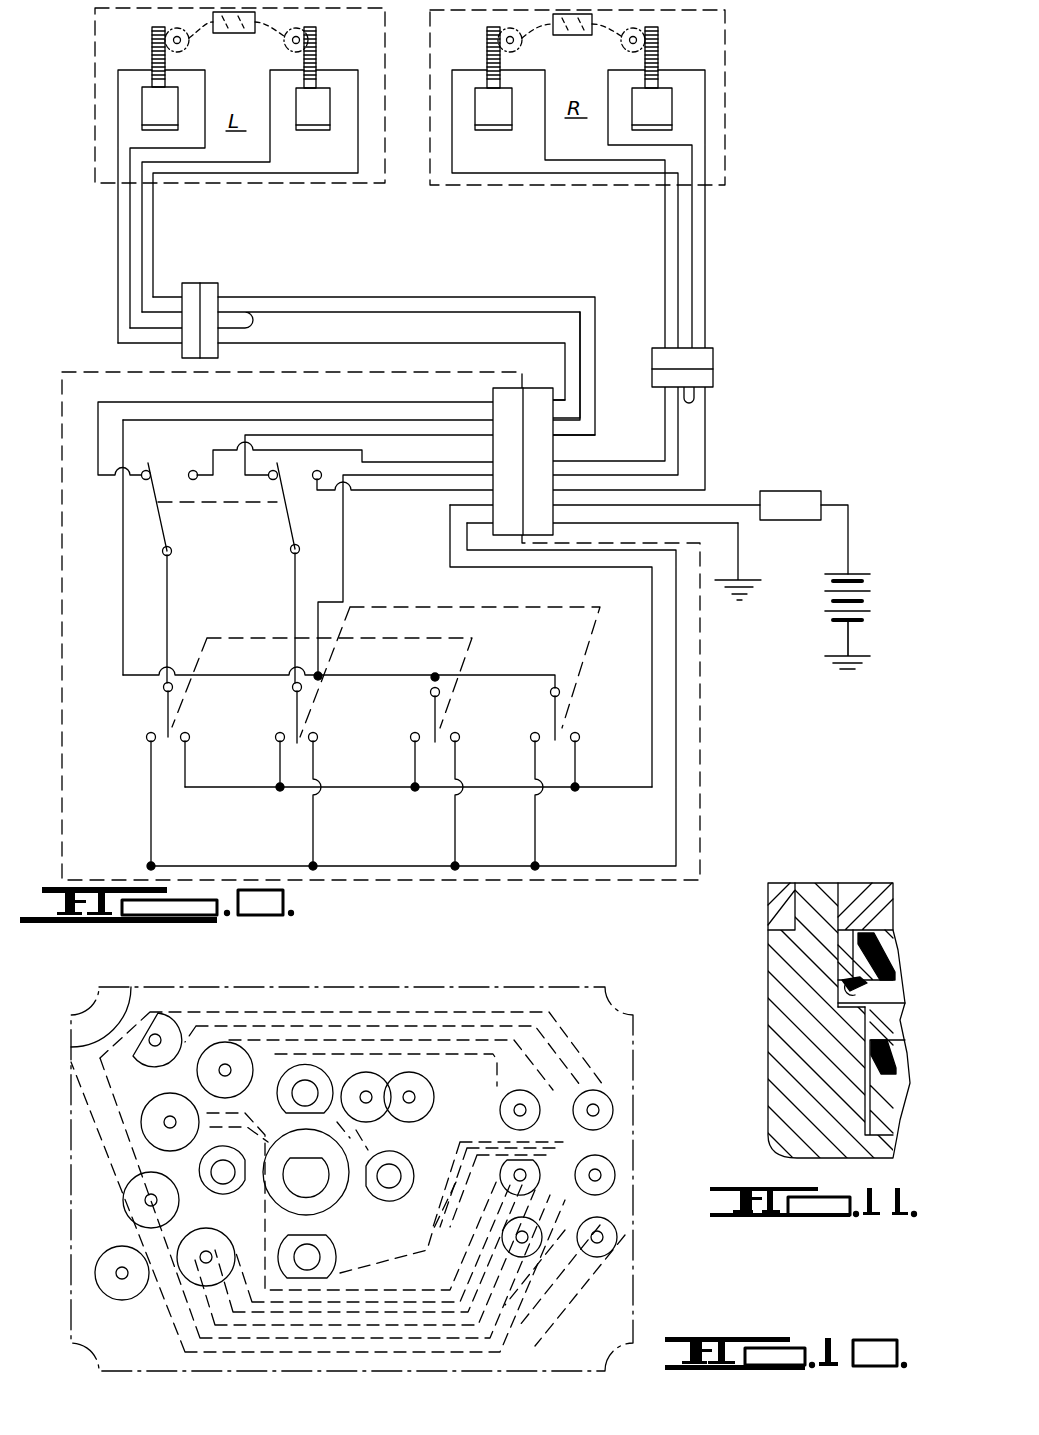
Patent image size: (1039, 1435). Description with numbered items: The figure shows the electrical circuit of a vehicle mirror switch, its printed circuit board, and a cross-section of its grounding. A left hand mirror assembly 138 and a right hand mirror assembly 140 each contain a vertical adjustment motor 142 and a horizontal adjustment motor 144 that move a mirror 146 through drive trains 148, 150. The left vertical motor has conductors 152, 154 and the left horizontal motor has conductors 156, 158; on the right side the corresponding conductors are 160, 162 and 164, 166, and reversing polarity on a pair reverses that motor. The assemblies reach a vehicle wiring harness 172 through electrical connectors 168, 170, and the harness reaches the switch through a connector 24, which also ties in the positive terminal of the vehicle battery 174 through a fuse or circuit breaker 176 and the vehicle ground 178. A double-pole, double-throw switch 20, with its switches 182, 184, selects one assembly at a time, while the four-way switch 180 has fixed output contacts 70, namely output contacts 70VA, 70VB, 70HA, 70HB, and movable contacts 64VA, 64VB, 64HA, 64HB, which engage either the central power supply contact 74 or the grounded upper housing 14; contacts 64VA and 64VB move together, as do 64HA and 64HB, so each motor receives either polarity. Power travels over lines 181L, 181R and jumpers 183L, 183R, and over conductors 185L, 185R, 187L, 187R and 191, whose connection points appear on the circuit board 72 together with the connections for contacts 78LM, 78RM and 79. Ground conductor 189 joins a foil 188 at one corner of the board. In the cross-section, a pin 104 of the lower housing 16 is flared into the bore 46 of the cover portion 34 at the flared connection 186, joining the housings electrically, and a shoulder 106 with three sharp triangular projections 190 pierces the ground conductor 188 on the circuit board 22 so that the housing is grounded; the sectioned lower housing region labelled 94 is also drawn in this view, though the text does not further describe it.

In FIG. 9, the left hand mirror assembly 138 is at (95, 133).
In FIG. 9, the right hand mirror assembly 140 is at (725, 37).
In FIG. 9, the vertical adjustment motor 142 is at (142, 97).
In FIG. 9, the horizontal adjustment motor 144 is at (330, 97).
In FIG. 9, the mirror 146 is at (232, 33).
In FIG. 9, the drive train 148 is at (152, 38).
In FIG. 9, the drive train 150 is at (310, 38).
In FIG. 9, the conductor 152 is at (118, 70).
In FIG. 9, the conductor 154 is at (205, 85).
In FIG. 9, the conductor 156 is at (270, 148).
In FIG. 9, the conductor 158 is at (345, 175).
In FIG. 9, the conductor 160 is at (452, 172).
In FIG. 9, the conductor 162 is at (597, 160).
In FIG. 9, the conductor 164 is at (690, 155).
In FIG. 9, the conductor 166 is at (705, 92).
In FIG. 9, the electrical connector 168 is at (205, 283).
In FIG. 9, the electrical connector 170 is at (713, 378).
In FIG. 9, the vehicle wiring harness 172 is at (618, 458).
In FIG. 9, the vehicle battery 174 is at (870, 588).
In FIG. 9, the fuse or circuit breaker 176 is at (800, 491).
In FIG. 9, the vehicle ground 178 is at (740, 545).
In FIG. 9, the four-way switch 180 is at (138, 713).
In FIG. 9, the line 181L is at (382, 297).
In FIG. 10, the line 181L is at (367, 1096).
In FIG. 9, the conductor 181R is at (678, 432).
In FIG. 10, the conductor 181R is at (410, 1096).
In FIG. 9, the switch 182 is at (168, 466).
In FIG. 9, the jumper 183L is at (255, 315).
In FIG. 9, the jumper 183R is at (694, 400).
In FIG. 9, the switch 184 is at (297, 464).
In FIG. 9, the conductor 185L is at (448, 297).
In FIG. 10, the conductor 185L is at (156, 1040).
In FIG. 9, the conductor 185R is at (705, 280).
In FIG. 10, the conductor 185R is at (122, 1273).
In FIG. 11, the flared connection 186 is at (810, 880).
In FIG. 9, the conductor 187L is at (262, 402).
In FIG. 10, the conductor 187L is at (225, 1070).
In FIG. 9, the conductor 187R is at (665, 277).
In FIG. 10, the conductor 187R is at (206, 1257).
In FIG. 10, the ground conductor foil 188 is at (103, 998).
In FIG. 11, the ground conductor foil 188 is at (867, 1015).
In FIG. 9, the ground conductor 189 is at (676, 815).
In FIG. 10, the ground conductor 189 is at (151, 1200).
In FIG. 11, the sharp triangular projections 190 is at (863, 1000).
In FIG. 9, the conductor 191 is at (676, 645).
In FIG. 10, the conductor 191 is at (170, 1122).
In FIG. 9, the double-pole, double-throw switch 20 is at (104, 504).
In FIG. 9, the circuit board 22 is at (477, 383).
In FIG. 11, the circuit board 22 is at (838, 980).
In FIG. 9, the connector 24 is at (527, 388).
In FIG. 9, the upper housing 14 is at (150, 738).
In FIG. 11, the upper housing 14 is at (845, 878).
In FIG. 11, the lower housing 16 is at (762, 1023).
In FIG. 11, the cover portion 34 is at (883, 883).
In FIG. 11, the bore 46 is at (846, 910).
In FIG. 9, the fixed output contacts 70 is at (63, 668).
In FIG. 9, the output contact 70VA is at (163, 687).
In FIG. 10, the output contact 70VA is at (223, 1172).
In FIG. 9, the output contact 70VB is at (433, 677).
In FIG. 10, the output contact 70VB is at (389, 1176).
In FIG. 9, the output contact 70HA is at (555, 688).
In FIG. 10, the output contact 70HA is at (305, 1092).
In FIG. 9, the output contact 70HB is at (297, 684).
In FIG. 10, the output contact 70HB is at (307, 1257).
In FIG. 9, the movable contact 64VA is at (180, 693).
In FIG. 9, the movable contact 64VB is at (447, 708).
In FIG. 9, the movable contact 64HA is at (560, 708).
In FIG. 9, the movable contact 64HB is at (310, 693).
In FIG. 10, the circuit board 72 is at (393, 975).
In FIG. 9, the central power supply contact 74 is at (190, 737).
In FIG. 10, the central power supply contact 74 is at (314, 1193).
In FIG. 10, the contacts 78LM is at (593, 1110).
In FIG. 10, the contacts 78RM is at (597, 1237).
In FIG. 10, the contacts 79 is at (595, 1175).
In FIG. 11, the contact 94 is at (855, 1100).
In FIG. 11, the pin 104 is at (790, 908).
In FIG. 11, the shoulder 106 is at (840, 993).